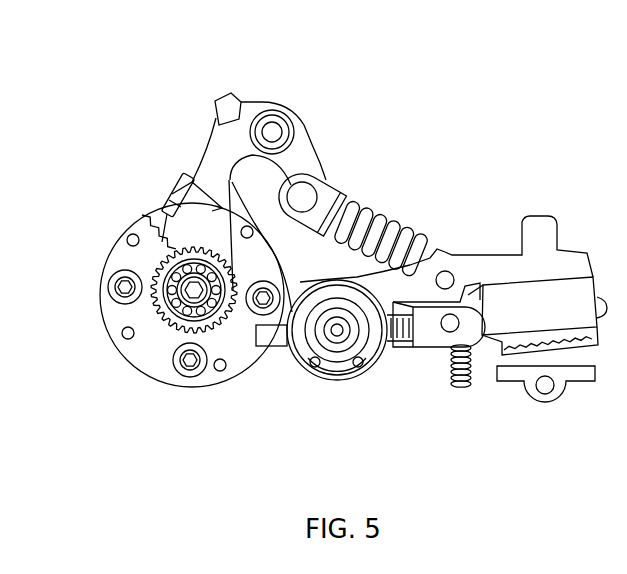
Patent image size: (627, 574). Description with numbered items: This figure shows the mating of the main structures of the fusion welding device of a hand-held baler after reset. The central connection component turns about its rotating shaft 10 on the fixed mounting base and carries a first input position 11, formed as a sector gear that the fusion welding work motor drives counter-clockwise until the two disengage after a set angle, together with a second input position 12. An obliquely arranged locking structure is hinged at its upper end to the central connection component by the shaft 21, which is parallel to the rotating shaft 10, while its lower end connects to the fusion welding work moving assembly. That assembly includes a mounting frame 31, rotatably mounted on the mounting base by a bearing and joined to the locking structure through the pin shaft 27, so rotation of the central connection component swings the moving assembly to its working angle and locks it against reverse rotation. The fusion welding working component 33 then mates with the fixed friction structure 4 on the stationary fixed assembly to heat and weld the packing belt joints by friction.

The fixed friction structure 4 is at (555, 370).
The rotating shaft 10 is at (273, 133).
The first input position 11 is at (200, 253).
The second input position 12 is at (148, 213).
The shaft 21 is at (302, 197).
The pin shaft 27 is at (445, 280).
The mounting frame 31 is at (490, 270).
The fusion welding working component 33 is at (537, 343).